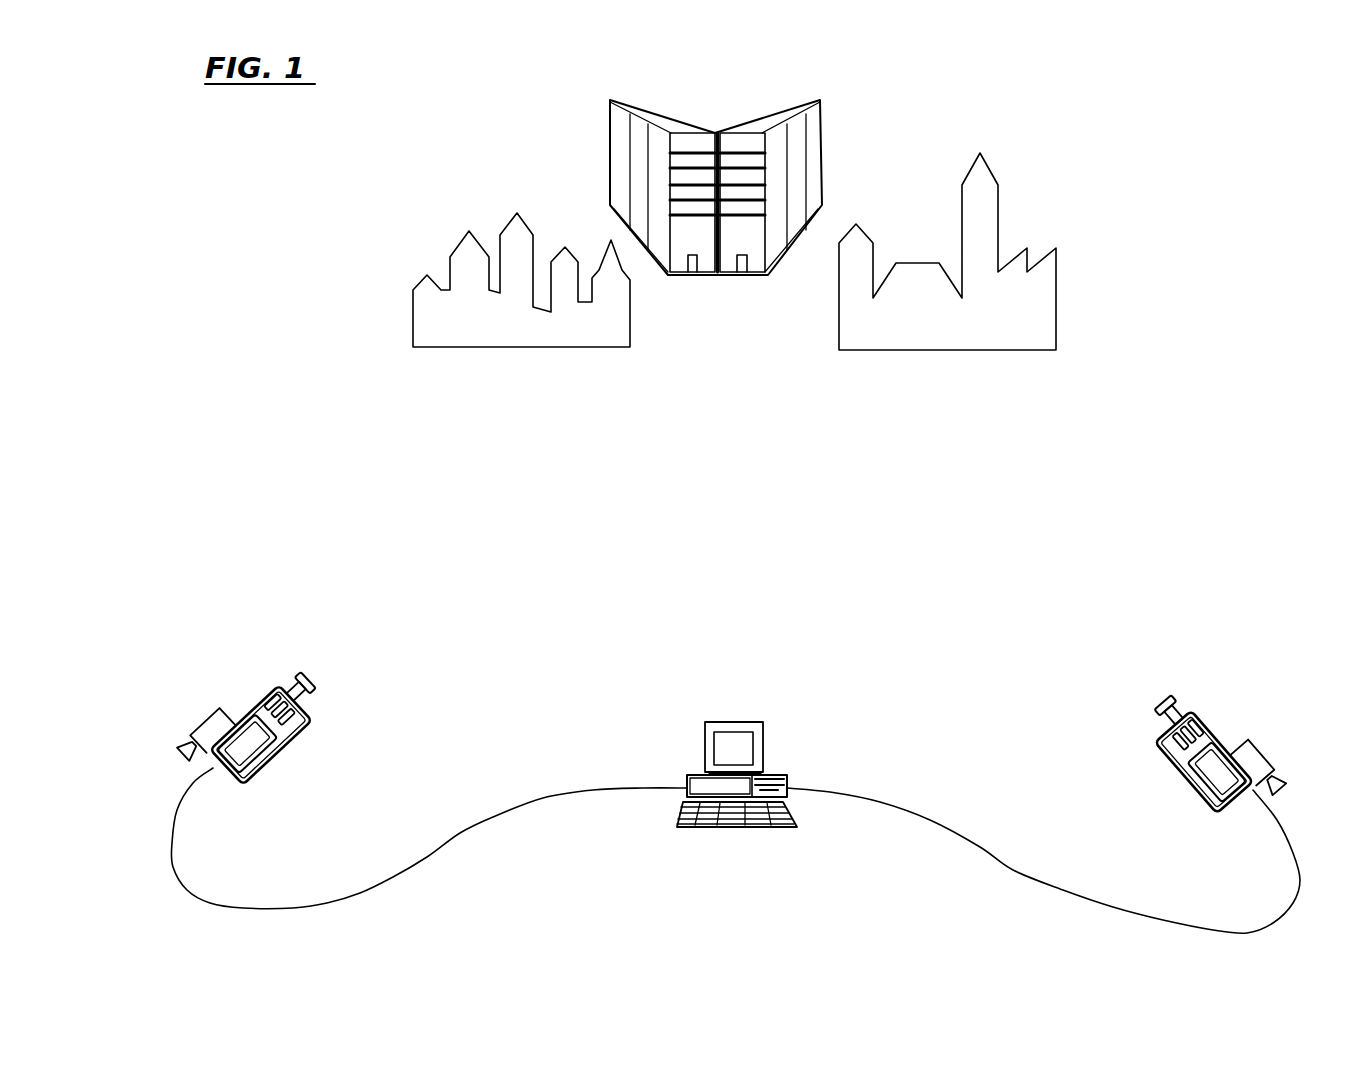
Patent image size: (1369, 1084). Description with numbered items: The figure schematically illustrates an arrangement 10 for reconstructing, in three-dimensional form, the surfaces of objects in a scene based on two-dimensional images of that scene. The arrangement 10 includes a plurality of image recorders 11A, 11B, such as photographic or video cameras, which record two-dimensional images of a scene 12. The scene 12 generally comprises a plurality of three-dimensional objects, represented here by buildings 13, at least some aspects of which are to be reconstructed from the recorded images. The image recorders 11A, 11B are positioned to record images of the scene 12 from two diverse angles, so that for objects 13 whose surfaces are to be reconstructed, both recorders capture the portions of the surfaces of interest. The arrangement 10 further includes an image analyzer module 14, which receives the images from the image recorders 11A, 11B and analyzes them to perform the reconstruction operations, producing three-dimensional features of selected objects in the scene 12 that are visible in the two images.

The arrangement 10 is at (943, 602).
The image recorder 11A is at (1220, 730).
The image recorder 11B is at (280, 687).
The scene 12 is at (467, 172).
The buildings 13 is at (840, 318).
The image analyzer module 14 is at (733, 720).